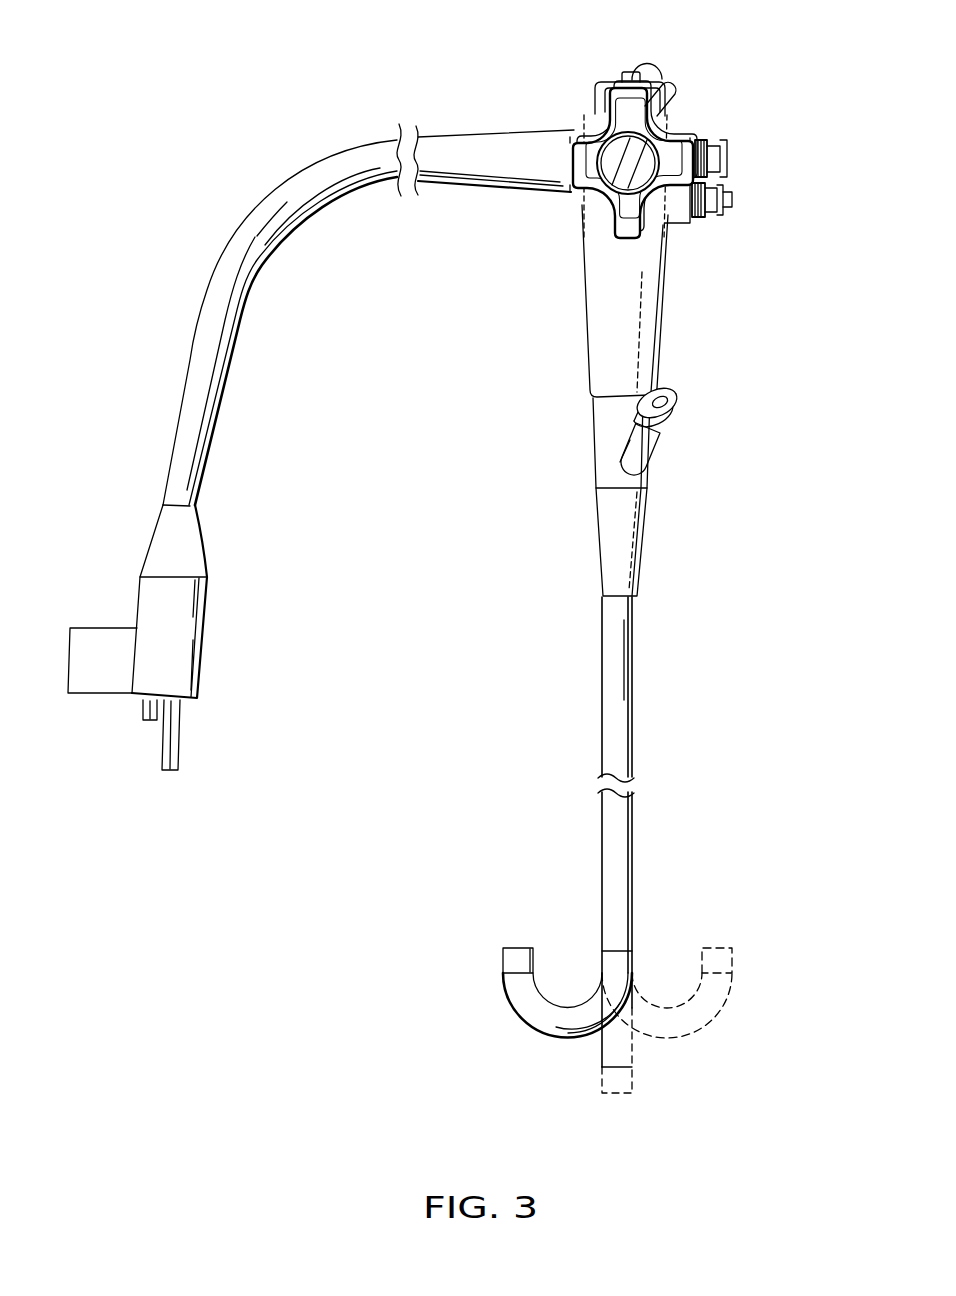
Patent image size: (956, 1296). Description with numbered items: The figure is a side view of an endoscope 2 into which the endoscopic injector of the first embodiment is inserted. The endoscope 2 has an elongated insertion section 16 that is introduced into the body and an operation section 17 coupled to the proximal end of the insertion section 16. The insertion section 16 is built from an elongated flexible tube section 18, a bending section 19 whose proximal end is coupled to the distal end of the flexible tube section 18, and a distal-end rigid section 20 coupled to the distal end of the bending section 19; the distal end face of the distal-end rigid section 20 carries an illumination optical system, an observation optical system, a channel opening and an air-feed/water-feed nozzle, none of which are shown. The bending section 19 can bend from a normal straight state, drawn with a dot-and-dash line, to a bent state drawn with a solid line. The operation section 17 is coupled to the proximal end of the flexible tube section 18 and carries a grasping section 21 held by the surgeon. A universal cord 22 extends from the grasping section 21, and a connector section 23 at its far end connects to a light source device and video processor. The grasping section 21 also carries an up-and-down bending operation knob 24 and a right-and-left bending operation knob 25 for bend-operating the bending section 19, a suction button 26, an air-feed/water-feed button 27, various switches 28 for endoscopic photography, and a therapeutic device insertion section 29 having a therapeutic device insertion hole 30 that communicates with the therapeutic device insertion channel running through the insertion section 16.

The endoscope 2 is at (748, 334).
The insertion section 16 is at (682, 752).
The operation section 17 is at (558, 350).
The flexible tube section 18 is at (637, 677).
The bending section 19 is at (538, 1020).
The distal-end rigid section 20 is at (502, 958).
The grasping section 21 is at (657, 372).
The universal cord 22 is at (482, 136).
The connector section 23 is at (207, 626).
The up-and-down bending operation knob 24 is at (566, 205).
The right-and-left bending operation knob 25 is at (582, 208).
The suction button 26 is at (728, 157).
The air-feed/water-feed button 27 is at (733, 200).
The switches 28 is at (668, 80).
The therapeutic device insertion section 29 is at (671, 428).
The therapeutic device insertion hole 30 is at (668, 401).